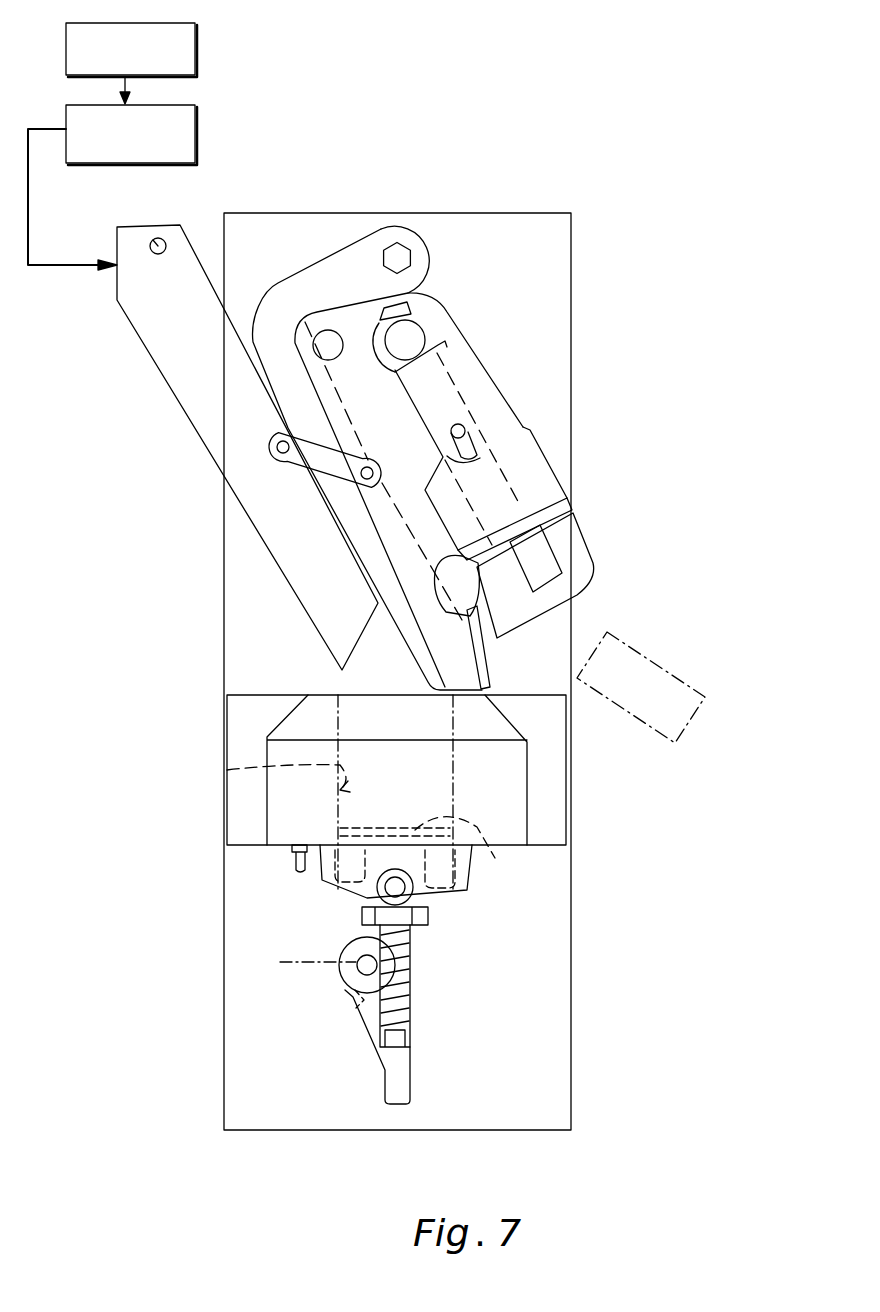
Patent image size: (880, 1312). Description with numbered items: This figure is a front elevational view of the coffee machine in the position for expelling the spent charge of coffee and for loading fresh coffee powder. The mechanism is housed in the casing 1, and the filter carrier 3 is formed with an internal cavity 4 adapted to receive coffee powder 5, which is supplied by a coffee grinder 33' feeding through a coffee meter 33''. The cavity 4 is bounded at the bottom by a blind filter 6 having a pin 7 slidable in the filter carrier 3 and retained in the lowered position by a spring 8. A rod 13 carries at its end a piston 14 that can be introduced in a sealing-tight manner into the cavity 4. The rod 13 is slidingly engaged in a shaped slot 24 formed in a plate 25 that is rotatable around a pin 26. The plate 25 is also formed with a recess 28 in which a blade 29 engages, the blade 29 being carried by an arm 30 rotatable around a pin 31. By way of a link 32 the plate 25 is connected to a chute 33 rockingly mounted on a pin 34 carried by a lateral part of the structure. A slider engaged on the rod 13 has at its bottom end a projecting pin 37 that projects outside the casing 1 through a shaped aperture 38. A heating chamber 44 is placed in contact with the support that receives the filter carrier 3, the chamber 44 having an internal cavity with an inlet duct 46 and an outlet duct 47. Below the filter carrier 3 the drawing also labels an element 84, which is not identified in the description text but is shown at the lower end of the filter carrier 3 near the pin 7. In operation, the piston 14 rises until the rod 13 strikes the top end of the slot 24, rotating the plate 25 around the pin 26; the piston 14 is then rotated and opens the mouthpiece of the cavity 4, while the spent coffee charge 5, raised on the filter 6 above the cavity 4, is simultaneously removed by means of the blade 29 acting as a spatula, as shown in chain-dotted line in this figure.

The casing 1 is at (235, 600).
The filter carrier 3 is at (468, 878).
The internal cavity 4 is at (227, 770).
The coffee powder 5 is at (705, 692).
The blind filter 6 is at (424, 852).
The pin 7 is at (400, 1040).
The spring 8 is at (370, 1022).
The rod 13 is at (410, 342).
The piston 14 is at (560, 455).
The shaped slot 24 is at (545, 570).
The plate 25 is at (575, 560).
The pin 26 is at (333, 350).
The recess 28 is at (470, 585).
The blade 29 is at (485, 670).
The arm 30 is at (285, 322).
The pin 31 is at (400, 245).
The link 32 is at (310, 462).
The chute 33 is at (247, 447).
The coffee grinder 33' is at (169, 50).
The coffee meter 33'' is at (152, 174).
The pin 34 is at (158, 238).
The projecting pin 37 is at (319, 965).
The shaped aperture 38 is at (360, 1003).
The heating chamber 44 is at (505, 795).
The inlet duct 46 is at (300, 868).
The outlet duct 47 is at (465, 440).
The bushing 84 is at (378, 892).